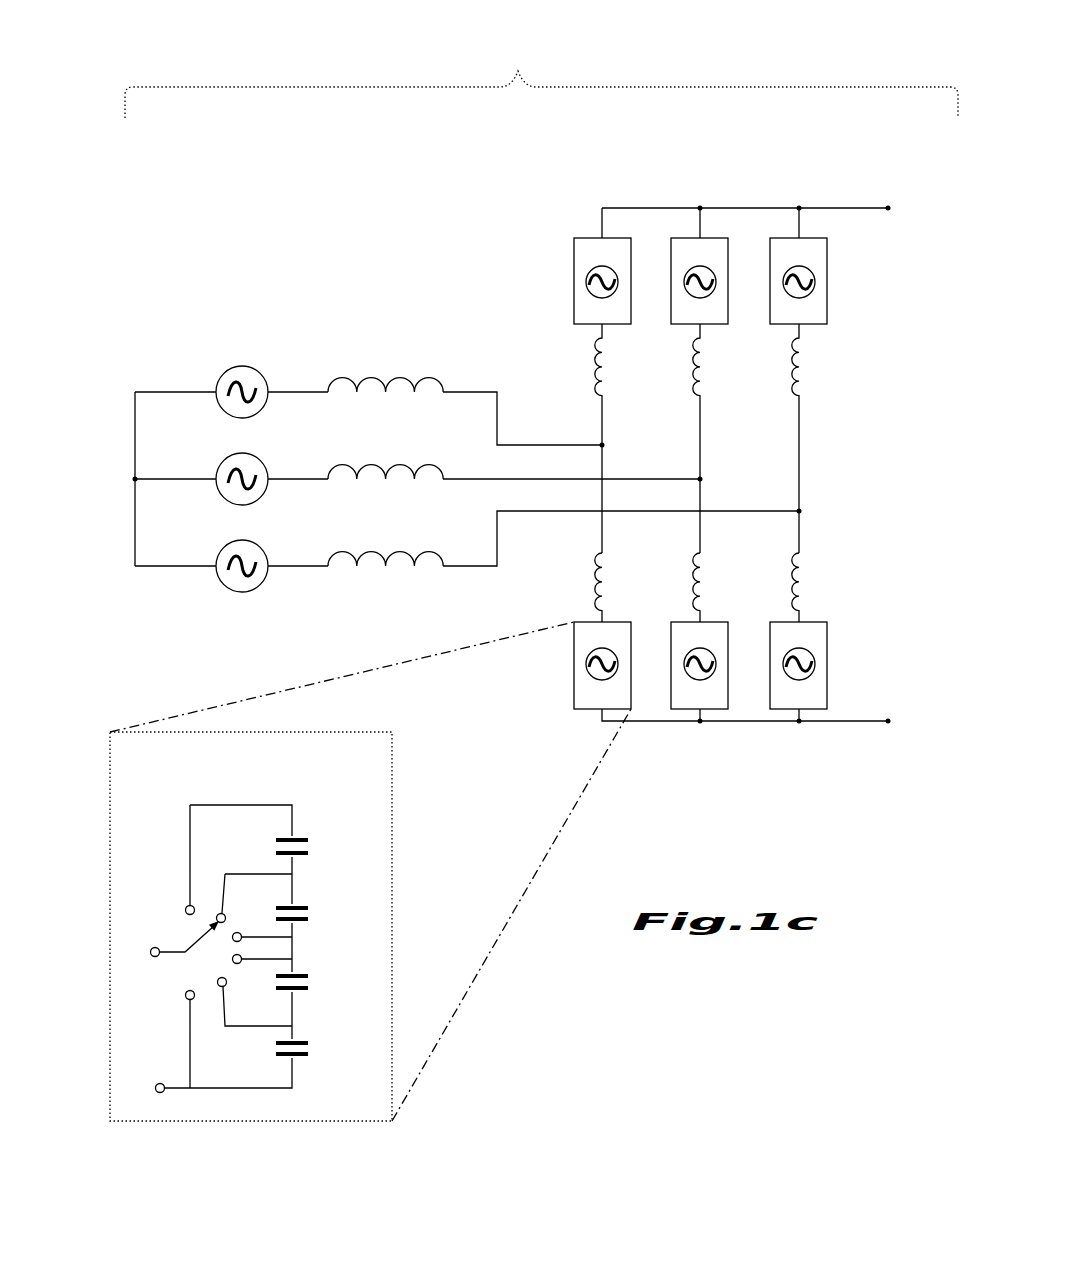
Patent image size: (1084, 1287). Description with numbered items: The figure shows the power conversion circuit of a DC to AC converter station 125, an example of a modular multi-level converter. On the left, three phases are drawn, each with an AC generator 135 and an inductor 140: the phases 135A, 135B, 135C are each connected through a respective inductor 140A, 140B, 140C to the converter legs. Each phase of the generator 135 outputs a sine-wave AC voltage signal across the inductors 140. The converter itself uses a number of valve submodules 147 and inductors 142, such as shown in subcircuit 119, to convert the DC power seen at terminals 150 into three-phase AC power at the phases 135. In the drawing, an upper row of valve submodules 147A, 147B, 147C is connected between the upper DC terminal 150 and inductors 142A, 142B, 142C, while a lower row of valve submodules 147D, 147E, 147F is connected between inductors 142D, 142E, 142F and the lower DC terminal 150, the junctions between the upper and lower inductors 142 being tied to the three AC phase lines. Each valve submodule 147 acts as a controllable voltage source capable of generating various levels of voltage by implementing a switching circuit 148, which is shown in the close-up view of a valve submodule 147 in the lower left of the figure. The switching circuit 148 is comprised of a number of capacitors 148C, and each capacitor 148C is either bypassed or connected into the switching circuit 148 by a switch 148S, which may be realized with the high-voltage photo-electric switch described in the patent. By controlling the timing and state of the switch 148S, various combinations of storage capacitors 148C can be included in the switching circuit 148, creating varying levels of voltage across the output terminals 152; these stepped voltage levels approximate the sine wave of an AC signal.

The DC to AC converter station 125 is at (521, 61).
The subcircuit 119 is at (749, 177).
The terminals 150 is at (888, 208).
The valve submodule 147 is at (827, 307).
The valve submodule 147A is at (574, 262).
The valve submodule 147B is at (671, 262).
The valve submodule 147C is at (770, 262).
The valve submodule 147D is at (574, 640).
The valve submodule 147E is at (671, 640).
The valve submodule 147F is at (770, 640).
The inductor 142 is at (802, 393).
The inductor 142A is at (597, 380).
The inductor 142B is at (695, 380).
The inductor 142C is at (794, 380).
The inductor 142D is at (597, 582).
The inductor 142E is at (695, 582).
The inductor 142F is at (794, 582).
The AC generator 135 is at (240, 366).
The AC generator phase 135A is at (222, 378).
The AC generator phase 135B is at (222, 465).
The AC generator phase 135C is at (222, 552).
The inductor 140 is at (385, 372).
The inductor 140A is at (357, 378).
The inductor 140B is at (357, 465).
The inductor 140C is at (357, 552).
The switching circuit 148 is at (239, 789).
The capacitor 148C is at (310, 845).
The switch 148S is at (188, 950).
The output terminals 152 is at (150, 952).